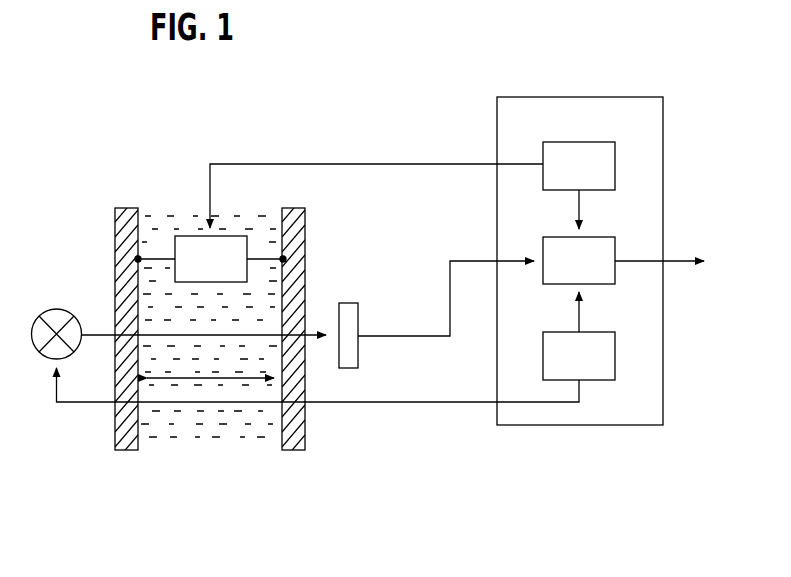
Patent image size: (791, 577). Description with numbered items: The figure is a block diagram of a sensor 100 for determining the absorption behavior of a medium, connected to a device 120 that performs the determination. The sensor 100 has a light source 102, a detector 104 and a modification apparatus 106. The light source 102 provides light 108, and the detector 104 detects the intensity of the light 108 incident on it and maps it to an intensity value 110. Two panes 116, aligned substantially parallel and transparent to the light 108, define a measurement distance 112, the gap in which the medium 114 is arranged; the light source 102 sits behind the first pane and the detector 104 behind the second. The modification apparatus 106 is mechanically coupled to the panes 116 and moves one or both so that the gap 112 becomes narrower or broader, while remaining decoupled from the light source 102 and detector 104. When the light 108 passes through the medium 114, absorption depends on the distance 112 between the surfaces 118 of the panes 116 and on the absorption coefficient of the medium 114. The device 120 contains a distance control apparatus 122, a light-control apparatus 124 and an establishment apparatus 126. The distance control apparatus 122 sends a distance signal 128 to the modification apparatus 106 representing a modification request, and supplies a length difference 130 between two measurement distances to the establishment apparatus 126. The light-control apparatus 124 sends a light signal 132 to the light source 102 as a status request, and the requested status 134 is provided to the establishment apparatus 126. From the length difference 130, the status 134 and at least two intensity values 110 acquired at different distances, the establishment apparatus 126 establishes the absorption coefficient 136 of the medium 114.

The sensor 100 is at (126, 133).
The light source 102 is at (58, 309).
The detector 104 is at (349, 369).
The modification apparatus 106 is at (174, 250).
The light 108 is at (230, 333).
The intensity value 110 is at (398, 334).
The measurement distance 112 is at (218, 383).
The medium 114 is at (160, 432).
The panes 116 is at (127, 208).
The surfaces 118 is at (141, 222).
The device for determining an absorption behavior 120 is at (546, 96).
The distance control apparatus 122 is at (615, 164).
The light-control apparatus 124 is at (615, 358).
The establishment apparatus 126 is at (615, 274).
The distance signal 128 is at (422, 162).
The length difference 130 is at (578, 204).
The light signal 132 is at (404, 403).
The status 134 is at (578, 310).
The absorption coefficient 136 is at (690, 260).